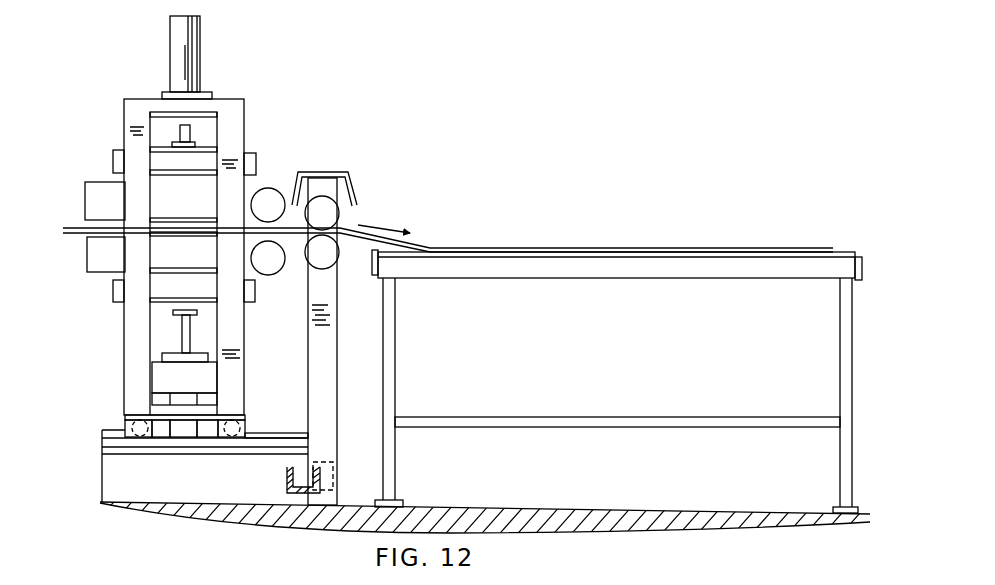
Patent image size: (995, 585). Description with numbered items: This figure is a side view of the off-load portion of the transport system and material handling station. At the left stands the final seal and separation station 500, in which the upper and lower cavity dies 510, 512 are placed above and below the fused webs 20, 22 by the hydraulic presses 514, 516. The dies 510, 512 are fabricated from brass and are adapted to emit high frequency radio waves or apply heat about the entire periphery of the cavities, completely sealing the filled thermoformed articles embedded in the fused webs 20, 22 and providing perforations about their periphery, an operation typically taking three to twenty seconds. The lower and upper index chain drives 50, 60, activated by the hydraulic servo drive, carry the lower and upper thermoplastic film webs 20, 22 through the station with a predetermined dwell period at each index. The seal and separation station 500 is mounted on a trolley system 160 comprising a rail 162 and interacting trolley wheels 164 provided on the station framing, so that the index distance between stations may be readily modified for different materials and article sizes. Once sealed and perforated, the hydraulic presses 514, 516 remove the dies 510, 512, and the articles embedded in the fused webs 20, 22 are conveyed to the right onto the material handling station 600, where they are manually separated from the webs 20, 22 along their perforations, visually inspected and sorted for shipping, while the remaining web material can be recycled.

The final seal and separation station 500 is at (234, 56).
The hydraulic press 514 is at (195, 67).
The upper cavity die 510 is at (252, 163).
The lower cavity die 512 is at (118, 292).
The lower index chain drive 50 is at (95, 204).
The upper index chain drive 60 is at (88, 252).
The lower thermoplastic film web 20 is at (434, 202).
The upper thermoplastic film web 22 is at (63, 230).
The hydraulic press 516 is at (183, 397).
The trolley wheels 164 is at (128, 426).
The trolley system 160 is at (120, 469).
The rail 162 is at (372, 462).
The material handling station 600 is at (606, 190).